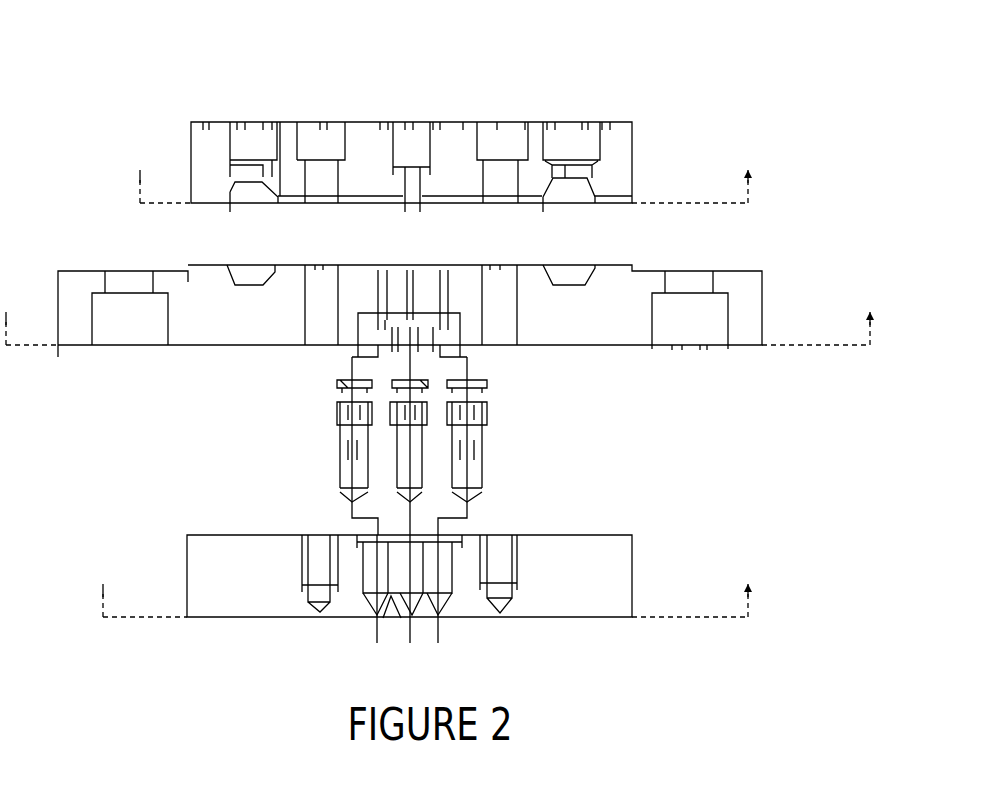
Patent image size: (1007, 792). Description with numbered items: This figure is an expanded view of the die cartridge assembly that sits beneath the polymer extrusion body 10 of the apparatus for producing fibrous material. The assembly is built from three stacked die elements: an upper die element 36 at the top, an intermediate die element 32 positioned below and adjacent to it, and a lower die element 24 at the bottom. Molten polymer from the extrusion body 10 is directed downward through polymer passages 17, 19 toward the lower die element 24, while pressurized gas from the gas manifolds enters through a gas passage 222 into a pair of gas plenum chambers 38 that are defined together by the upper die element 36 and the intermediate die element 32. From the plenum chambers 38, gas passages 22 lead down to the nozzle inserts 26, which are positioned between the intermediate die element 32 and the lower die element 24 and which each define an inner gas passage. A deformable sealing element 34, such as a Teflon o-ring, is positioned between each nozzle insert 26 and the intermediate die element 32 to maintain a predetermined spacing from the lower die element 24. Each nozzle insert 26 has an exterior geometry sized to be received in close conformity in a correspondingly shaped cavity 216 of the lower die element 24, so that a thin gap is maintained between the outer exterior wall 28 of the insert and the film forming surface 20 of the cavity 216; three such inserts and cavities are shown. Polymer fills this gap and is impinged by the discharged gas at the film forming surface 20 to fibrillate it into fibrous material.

The polymer extrusion body 10 is at (243, 76).
The upper die element 36 is at (645, 166).
The gas passage 222 is at (563, 121).
The polymer passage 17 is at (413, 183).
The gas plenum chamber 38 is at (251, 201).
The intermediate die element 32 is at (776, 308).
The gas passage 22 is at (377, 288).
The polymer passage 19 is at (428, 333).
The deformable sealing element 34 is at (320, 385).
The outer exterior wall 28 is at (338, 467).
The nozzle insert 26 is at (492, 455).
The lower die element 24 is at (651, 568).
The film forming surface 20 is at (453, 605).
The cavity 216 is at (401, 585).